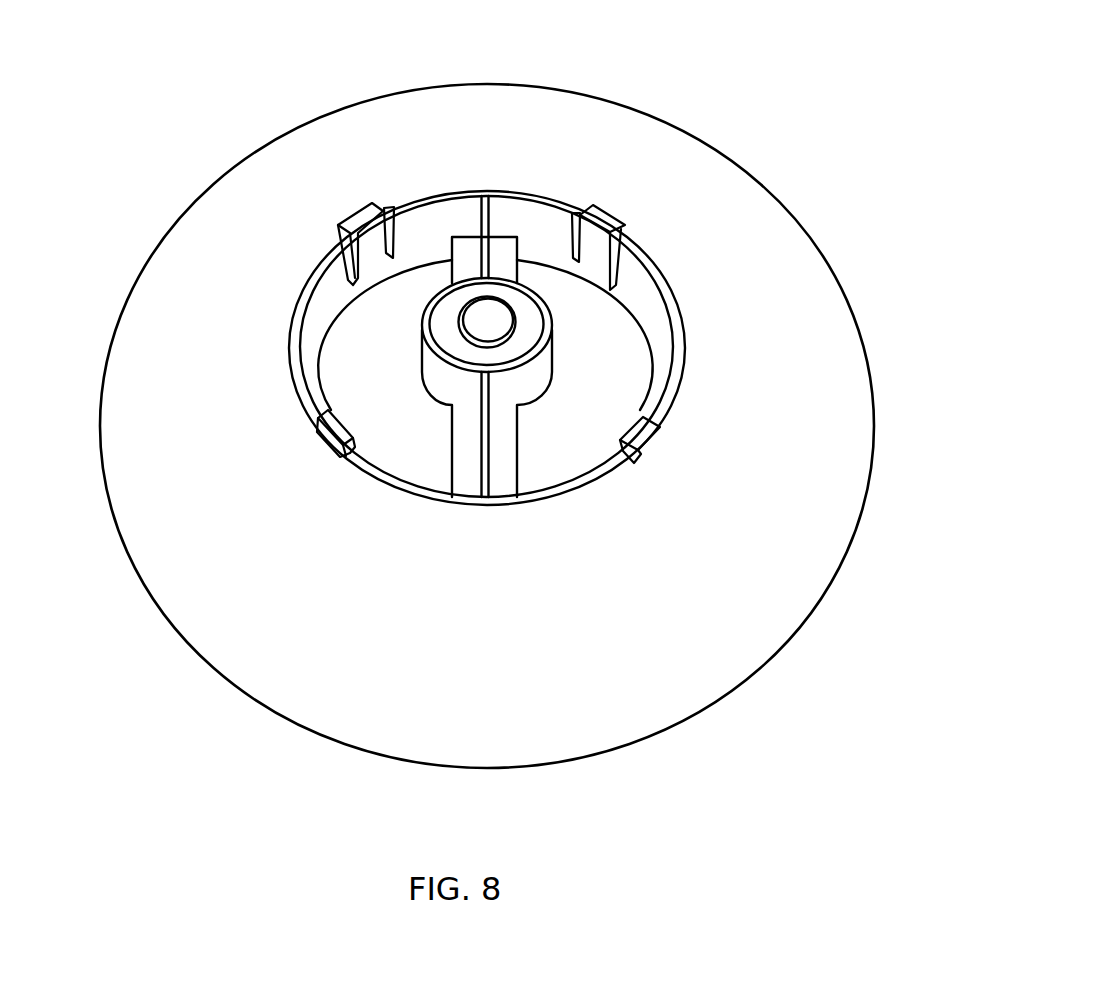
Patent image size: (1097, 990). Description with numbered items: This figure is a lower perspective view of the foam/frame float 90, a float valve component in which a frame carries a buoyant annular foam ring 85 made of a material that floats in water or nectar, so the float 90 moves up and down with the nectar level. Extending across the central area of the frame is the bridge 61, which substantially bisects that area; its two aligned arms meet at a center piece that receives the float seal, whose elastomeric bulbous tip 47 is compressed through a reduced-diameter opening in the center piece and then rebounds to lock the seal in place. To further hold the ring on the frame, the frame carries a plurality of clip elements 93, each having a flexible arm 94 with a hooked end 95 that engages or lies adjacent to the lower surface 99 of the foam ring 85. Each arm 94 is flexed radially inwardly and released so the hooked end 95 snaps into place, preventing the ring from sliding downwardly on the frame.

The foam/frame float 90 is at (757, 105).
The annular foam ring 85 is at (155, 247).
The lower surface of the foam ring 99 is at (470, 633).
The clip element 93 is at (383, 198).
The flexible arm 94 is at (377, 238).
The hooked end 95 is at (620, 226).
The bulbous tip 47 is at (485, 312).
The bridge 61 is at (527, 432).